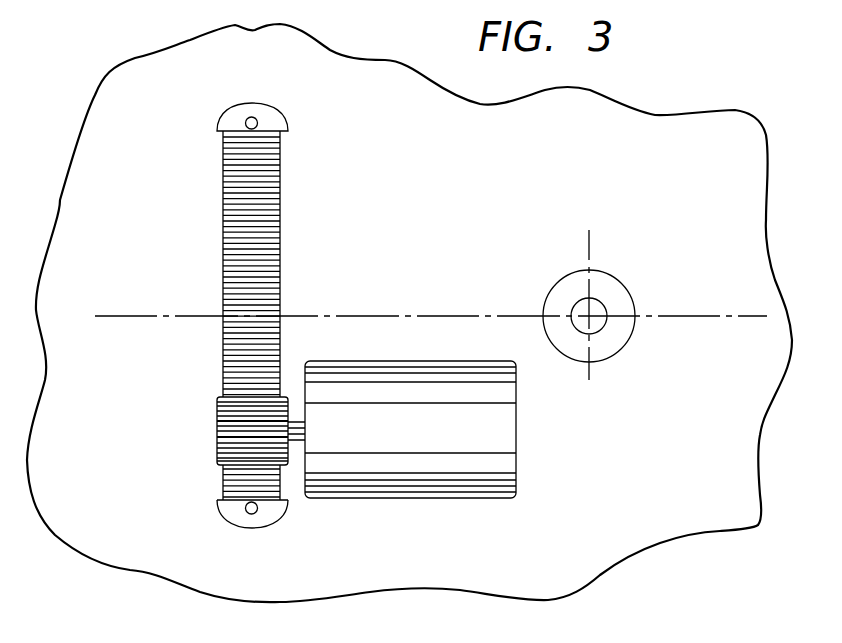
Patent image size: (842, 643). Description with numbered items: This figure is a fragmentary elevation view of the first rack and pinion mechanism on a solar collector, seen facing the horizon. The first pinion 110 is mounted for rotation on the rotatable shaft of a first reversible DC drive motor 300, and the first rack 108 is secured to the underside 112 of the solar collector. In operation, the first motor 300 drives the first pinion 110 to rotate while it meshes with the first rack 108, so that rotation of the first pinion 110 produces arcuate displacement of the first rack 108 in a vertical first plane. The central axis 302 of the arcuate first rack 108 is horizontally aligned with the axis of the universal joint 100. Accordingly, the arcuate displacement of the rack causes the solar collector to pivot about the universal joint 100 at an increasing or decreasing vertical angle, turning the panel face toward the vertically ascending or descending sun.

The underside 112 is at (429, 163).
The central axis 302 is at (135, 316).
The first rack 108 is at (223, 182).
The first pinion 110 is at (228, 432).
The first reversible DC drive motor 300 is at (503, 437).
The universal joint 100 is at (609, 278).